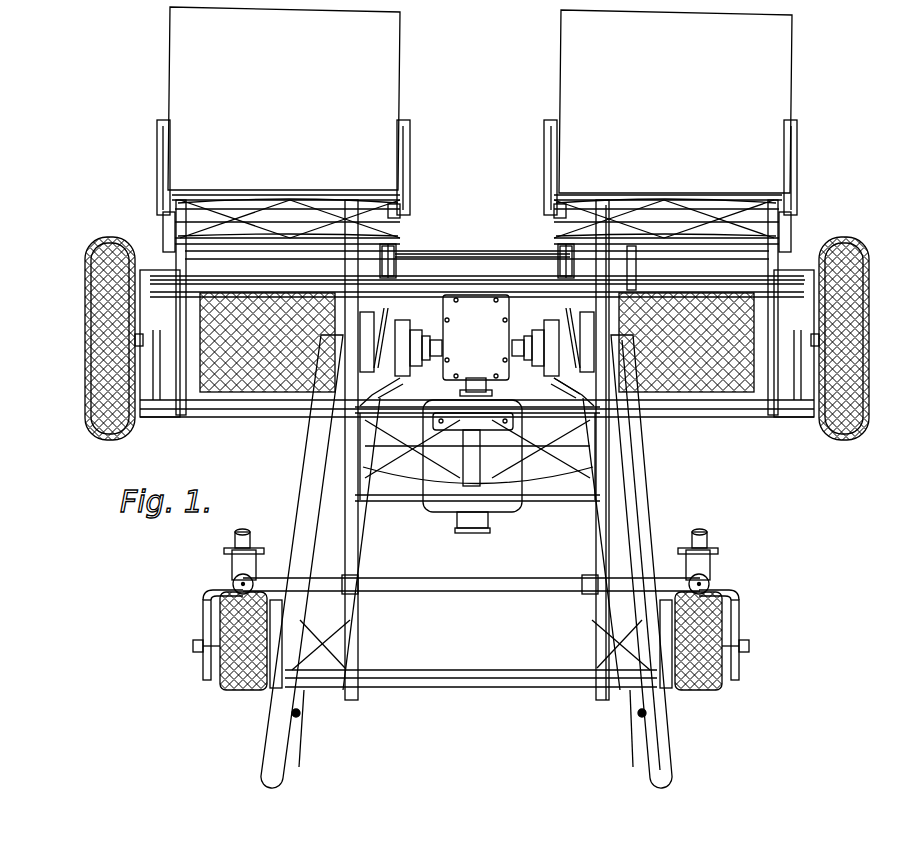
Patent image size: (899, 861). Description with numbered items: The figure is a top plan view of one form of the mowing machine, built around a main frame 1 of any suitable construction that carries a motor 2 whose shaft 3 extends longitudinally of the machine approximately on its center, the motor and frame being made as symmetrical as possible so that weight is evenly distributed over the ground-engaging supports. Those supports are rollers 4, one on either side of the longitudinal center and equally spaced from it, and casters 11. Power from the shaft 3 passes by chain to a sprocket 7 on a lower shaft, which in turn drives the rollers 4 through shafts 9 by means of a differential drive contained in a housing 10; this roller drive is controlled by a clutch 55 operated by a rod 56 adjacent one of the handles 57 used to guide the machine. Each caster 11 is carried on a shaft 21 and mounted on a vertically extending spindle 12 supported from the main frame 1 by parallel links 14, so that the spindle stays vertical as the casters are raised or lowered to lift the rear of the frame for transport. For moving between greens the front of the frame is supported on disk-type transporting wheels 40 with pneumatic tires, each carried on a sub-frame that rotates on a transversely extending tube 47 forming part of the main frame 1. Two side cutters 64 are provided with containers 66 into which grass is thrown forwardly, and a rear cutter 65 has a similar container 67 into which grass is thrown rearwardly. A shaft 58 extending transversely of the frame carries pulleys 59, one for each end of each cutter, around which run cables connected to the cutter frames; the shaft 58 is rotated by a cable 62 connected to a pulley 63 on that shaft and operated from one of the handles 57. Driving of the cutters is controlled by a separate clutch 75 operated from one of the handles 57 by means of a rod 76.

The main frame 1 is at (616, 476).
The motor 2 is at (502, 506).
The shaft 3 is at (477, 418).
The rollers 4 is at (270, 394).
The sprocket 7 is at (480, 378).
The shafts 9 is at (562, 356).
The housing 10 is at (476, 308).
The casters 11 is at (241, 690).
The spindles 12 is at (232, 582).
The parallel links 14 is at (278, 576).
The shaft 21 is at (193, 646).
The transporting wheels 40 is at (112, 222).
The tube 47 is at (272, 290).
The clutch 55 is at (548, 326).
The rod 56 is at (590, 546).
The handles 57 is at (290, 776).
The shaft 58 is at (447, 258).
The pulleys 59 is at (396, 268).
The cable 62 is at (632, 426).
The pulley 63 is at (636, 272).
The side cutters 64 is at (294, 197).
The rear cutter 65 is at (412, 466).
The containers 66 is at (480, 100).
The container 67 is at (471, 598).
The clutch 75 is at (406, 324).
The rod 76 is at (352, 564).